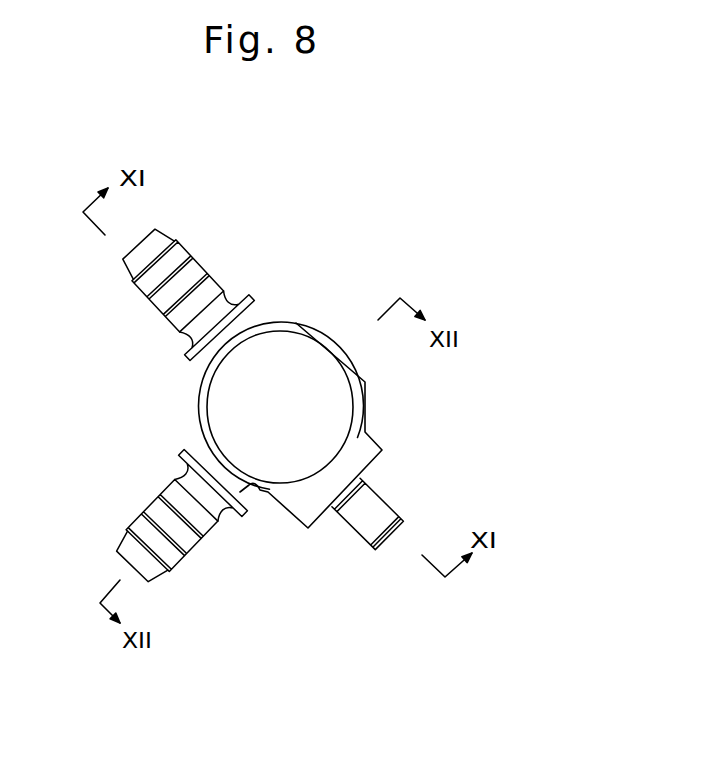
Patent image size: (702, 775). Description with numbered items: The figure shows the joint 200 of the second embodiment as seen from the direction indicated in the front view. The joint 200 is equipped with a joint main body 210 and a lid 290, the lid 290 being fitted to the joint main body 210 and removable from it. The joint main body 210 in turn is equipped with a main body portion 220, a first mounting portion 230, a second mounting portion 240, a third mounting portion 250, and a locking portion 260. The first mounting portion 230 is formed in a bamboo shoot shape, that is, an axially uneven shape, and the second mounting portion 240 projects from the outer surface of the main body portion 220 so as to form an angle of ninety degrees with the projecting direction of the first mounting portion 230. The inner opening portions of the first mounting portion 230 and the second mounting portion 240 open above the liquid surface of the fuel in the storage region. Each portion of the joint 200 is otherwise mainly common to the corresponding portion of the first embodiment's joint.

The joint 200 is at (327, 272).
The joint main body 210 is at (367, 421).
The main body portion 220 is at (197, 405).
The first mounting portion 230 is at (150, 303).
The second mounting portion 240 is at (158, 502).
The third mounting portion 250 is at (148, 292).
The locking portion 260 is at (355, 532).
The lid 290 is at (343, 400).